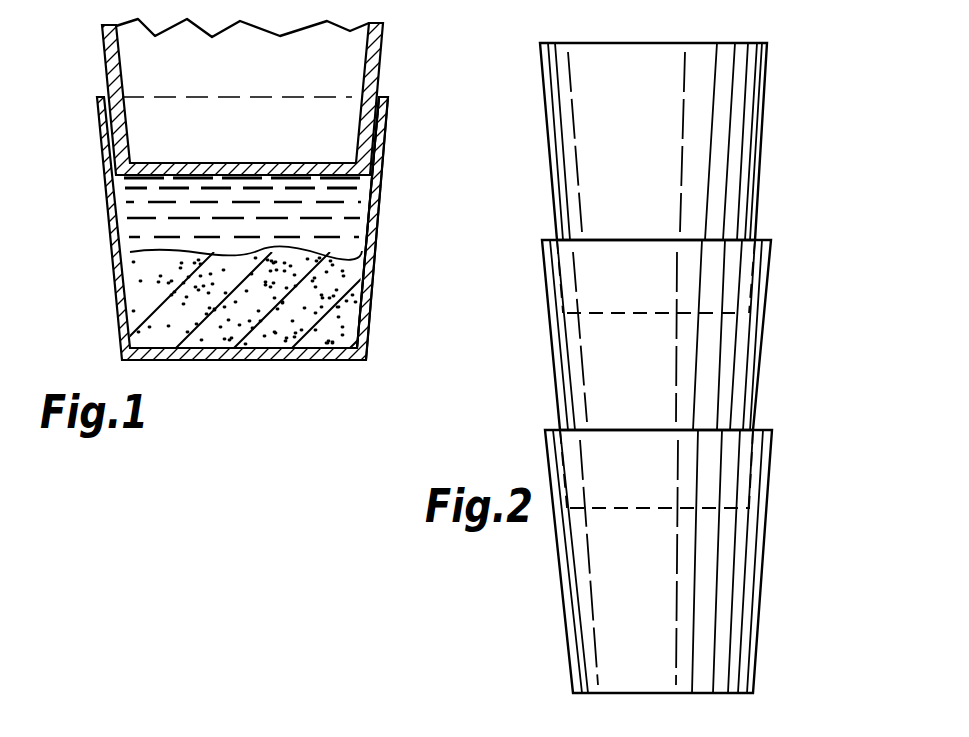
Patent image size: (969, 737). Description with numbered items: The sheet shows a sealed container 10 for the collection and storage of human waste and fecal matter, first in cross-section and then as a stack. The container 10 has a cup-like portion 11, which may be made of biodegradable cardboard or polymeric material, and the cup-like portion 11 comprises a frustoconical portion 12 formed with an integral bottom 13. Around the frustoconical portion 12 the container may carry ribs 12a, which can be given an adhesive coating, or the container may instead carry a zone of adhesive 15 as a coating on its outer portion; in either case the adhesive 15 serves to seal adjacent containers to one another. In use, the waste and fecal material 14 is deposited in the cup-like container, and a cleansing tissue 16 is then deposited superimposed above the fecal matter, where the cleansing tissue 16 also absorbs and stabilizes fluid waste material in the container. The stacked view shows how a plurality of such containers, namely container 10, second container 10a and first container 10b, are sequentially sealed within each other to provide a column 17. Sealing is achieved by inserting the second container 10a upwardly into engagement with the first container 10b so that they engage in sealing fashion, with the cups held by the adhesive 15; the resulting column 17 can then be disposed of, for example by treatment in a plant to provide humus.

In FIG. 1, the sealed container 10 is at (249, 210).
In FIG. 2, the sealed container 10 is at (747, 567).
In FIG. 2, the second container 10a is at (758, 364).
In FIG. 2, the first container 10b is at (755, 152).
In FIG. 1, the cup-like portion 11 is at (377, 229).
In FIG. 1, the frustoconical portion 12 is at (281, 249).
In FIG. 1, the ribs 12a is at (372, 306).
In FIG. 1, the bottom 13 is at (326, 362).
In FIG. 1, the waste and fecal material 14 is at (138, 288).
In FIG. 1, the zone of adhesive 15 is at (100, 113).
In FIG. 1, the cleansing tissue 16 is at (130, 207).
In FIG. 2, the column 17 is at (703, 368).